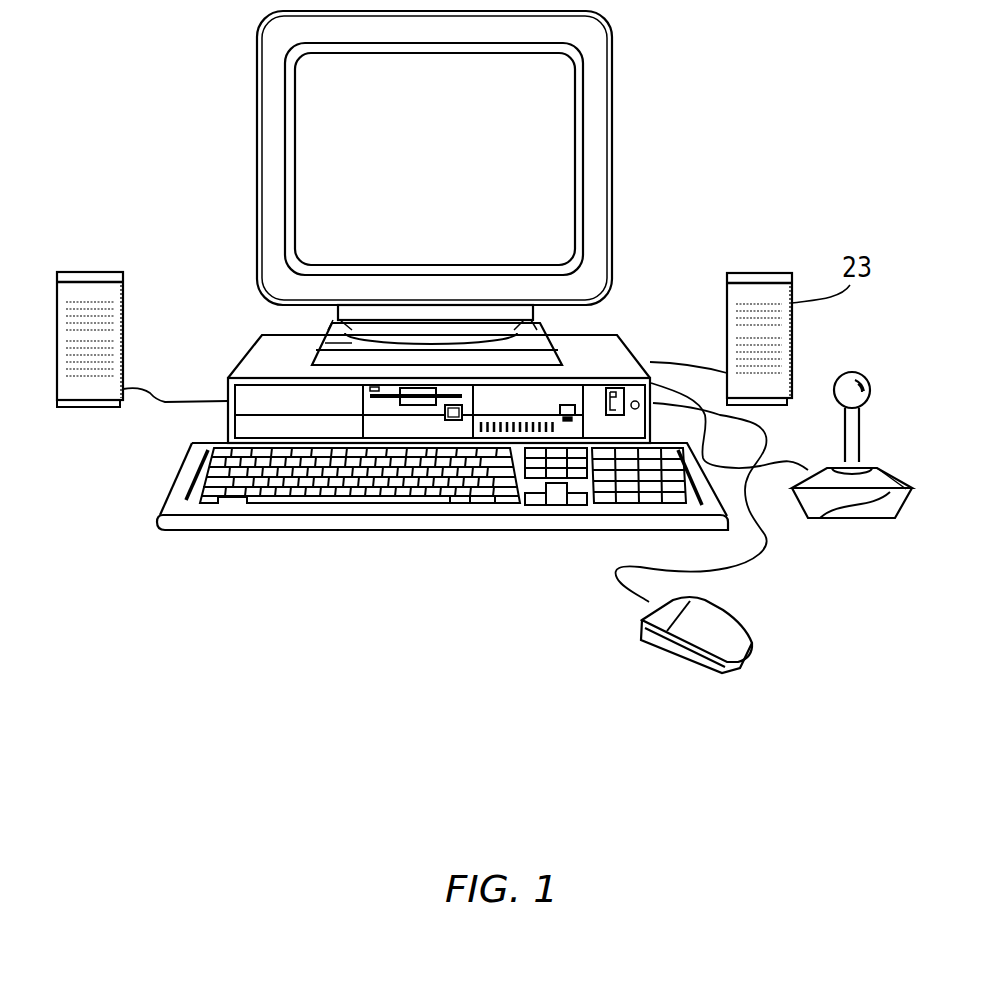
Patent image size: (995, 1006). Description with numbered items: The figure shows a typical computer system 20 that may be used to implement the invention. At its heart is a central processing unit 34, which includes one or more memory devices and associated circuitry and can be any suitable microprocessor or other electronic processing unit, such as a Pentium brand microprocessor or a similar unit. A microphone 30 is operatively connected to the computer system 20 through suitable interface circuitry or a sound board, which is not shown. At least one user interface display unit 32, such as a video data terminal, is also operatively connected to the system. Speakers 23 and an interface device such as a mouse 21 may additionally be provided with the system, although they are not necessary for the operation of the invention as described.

The computer system 20 is at (642, 253).
The mouse 21 is at (740, 663).
The speakers 23 is at (62, 272).
The microphone 30 is at (875, 518).
The user interface display unit 32 is at (258, 60).
The central processing unit 34 is at (240, 372).